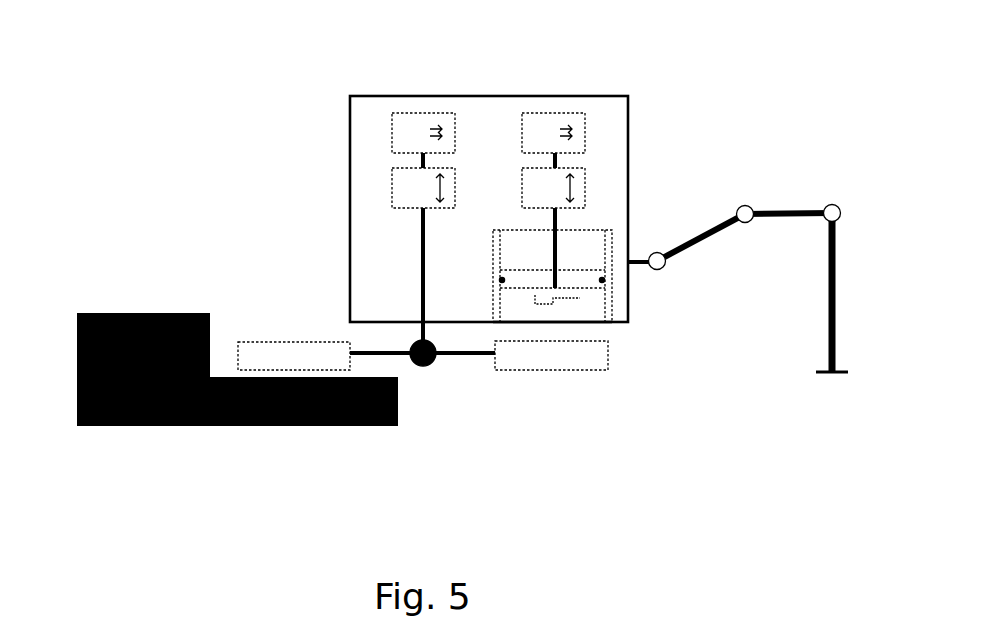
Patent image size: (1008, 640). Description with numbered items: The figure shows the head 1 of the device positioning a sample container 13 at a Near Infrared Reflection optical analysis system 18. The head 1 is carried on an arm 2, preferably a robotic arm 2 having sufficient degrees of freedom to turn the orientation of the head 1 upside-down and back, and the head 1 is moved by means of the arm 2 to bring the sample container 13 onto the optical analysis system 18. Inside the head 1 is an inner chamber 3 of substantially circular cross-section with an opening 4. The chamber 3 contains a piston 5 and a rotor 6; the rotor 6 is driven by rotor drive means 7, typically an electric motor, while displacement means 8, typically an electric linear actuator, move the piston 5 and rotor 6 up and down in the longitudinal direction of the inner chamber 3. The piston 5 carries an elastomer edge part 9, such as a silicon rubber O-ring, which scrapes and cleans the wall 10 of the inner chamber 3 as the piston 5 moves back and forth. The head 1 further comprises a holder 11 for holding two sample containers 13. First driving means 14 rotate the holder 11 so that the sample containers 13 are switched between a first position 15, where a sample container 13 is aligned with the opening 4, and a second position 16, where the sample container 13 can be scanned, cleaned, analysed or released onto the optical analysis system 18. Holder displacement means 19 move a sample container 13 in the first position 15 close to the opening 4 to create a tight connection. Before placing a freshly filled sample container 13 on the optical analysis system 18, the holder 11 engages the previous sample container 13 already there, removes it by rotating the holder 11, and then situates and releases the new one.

The head 1 is at (625, 105).
The arm 2 is at (786, 197).
The inner chamber 3 is at (583, 240).
The opening 4 is at (597, 322).
The piston 5 is at (577, 275).
The rotor 6 is at (603, 288).
The rotor drive means 7 is at (560, 125).
The displacement means 8 is at (515, 182).
The edge part 9 is at (605, 280).
The wall 10 is at (583, 300).
The holder 11 is at (445, 382).
The sample container 13 is at (287, 343).
The first driving means 14 is at (418, 122).
The first position 15 is at (558, 395).
The second position 16 is at (245, 320).
The optical analysis system 18 is at (276, 433).
The holder displacement means 19 is at (392, 185).